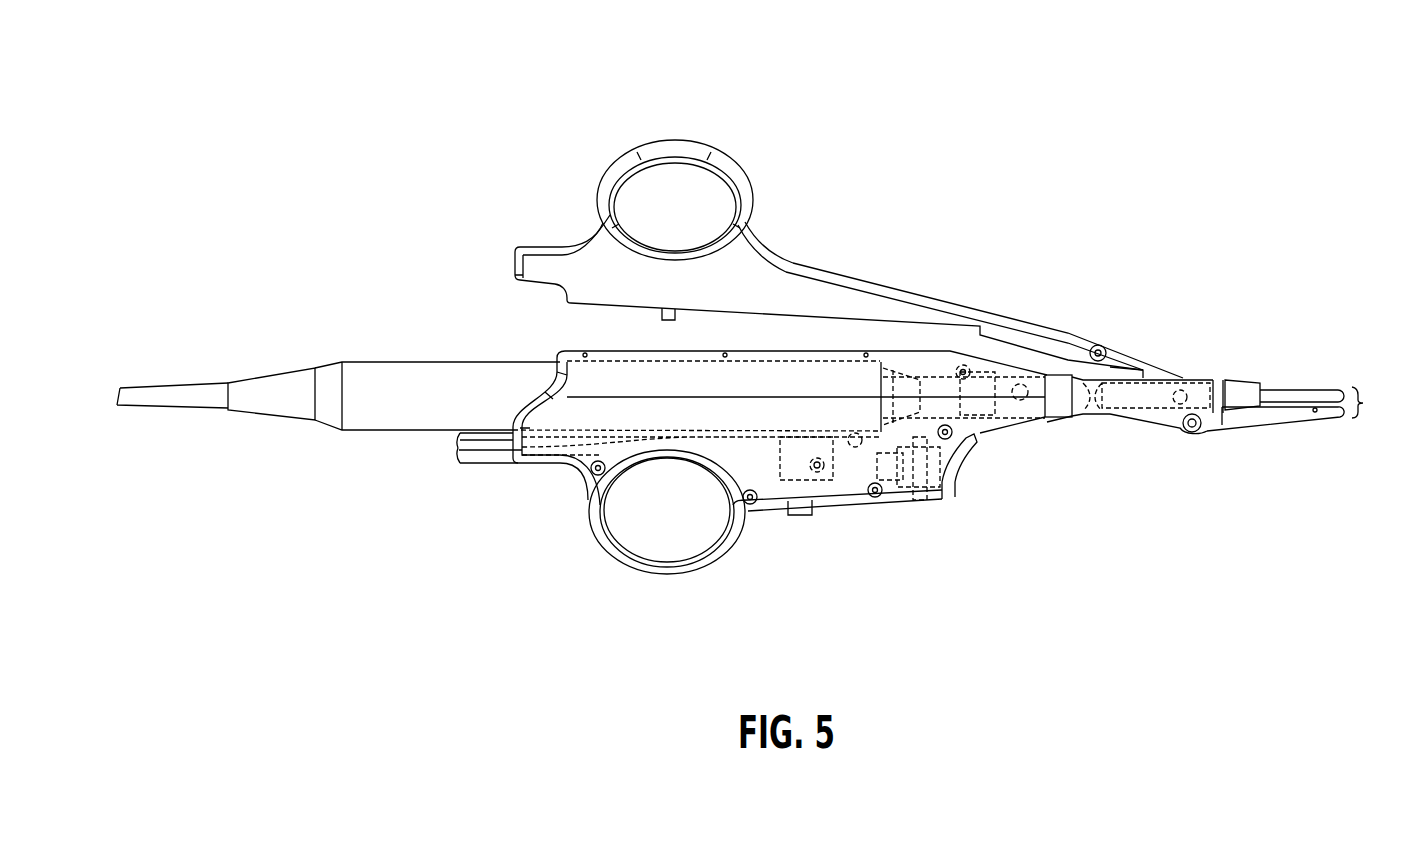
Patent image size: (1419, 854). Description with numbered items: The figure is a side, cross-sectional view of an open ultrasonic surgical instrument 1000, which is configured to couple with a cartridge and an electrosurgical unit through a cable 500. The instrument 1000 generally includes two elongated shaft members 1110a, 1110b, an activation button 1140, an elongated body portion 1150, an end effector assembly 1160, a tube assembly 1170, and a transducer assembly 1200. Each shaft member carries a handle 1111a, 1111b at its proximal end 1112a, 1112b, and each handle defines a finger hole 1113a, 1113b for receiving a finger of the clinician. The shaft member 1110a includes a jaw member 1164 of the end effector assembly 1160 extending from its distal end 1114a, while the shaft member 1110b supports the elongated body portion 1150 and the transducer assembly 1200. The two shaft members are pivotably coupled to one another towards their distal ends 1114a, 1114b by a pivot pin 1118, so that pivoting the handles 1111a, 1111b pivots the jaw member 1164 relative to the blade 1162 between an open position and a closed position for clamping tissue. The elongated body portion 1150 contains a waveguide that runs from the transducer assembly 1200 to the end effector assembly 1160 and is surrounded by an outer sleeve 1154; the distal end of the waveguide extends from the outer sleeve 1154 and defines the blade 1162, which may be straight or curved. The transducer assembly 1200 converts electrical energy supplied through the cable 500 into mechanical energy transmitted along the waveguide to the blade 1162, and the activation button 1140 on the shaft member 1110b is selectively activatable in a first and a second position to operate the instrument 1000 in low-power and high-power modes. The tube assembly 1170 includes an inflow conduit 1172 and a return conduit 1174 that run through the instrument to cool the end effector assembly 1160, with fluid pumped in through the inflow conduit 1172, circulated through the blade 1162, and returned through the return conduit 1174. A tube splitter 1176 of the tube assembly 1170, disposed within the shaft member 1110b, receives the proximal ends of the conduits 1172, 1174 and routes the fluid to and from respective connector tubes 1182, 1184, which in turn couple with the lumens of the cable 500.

The open ultrasonic surgical instrument 1000 is at (412, 92).
The cable 500 is at (197, 406).
The transducer assembly 1200 is at (350, 340).
The handle 1111a is at (710, 158).
The finger hole 1113a is at (655, 185).
The proximal end 1112a is at (770, 248).
The shaft member 1110a is at (890, 302).
The distal end 1114a is at (1120, 355).
The shaft member 1110b is at (923, 363).
The elongated body portion 1150 is at (1223, 355).
The distal end 1114b is at (1083, 420).
The pivot pin 1118 is at (1196, 435).
The outer sleeve 1154 is at (1240, 380).
The blade 1162 is at (1340, 392).
The jaw member 1164 is at (1295, 415).
The end effector assembly 1160 is at (1385, 402).
The activation button 1140 is at (975, 470).
The inflow conduit 1172 is at (917, 500).
The return conduit 1174 is at (917, 500).
The tube assembly 1170 is at (815, 480).
The tube splitter 1176 is at (780, 492).
The proximal end 1112b is at (743, 525).
The handle 1111b is at (670, 573).
The finger hole 1113b is at (623, 520).
The connector tube 1182 is at (470, 445).
The connector tube 1184 is at (497, 465).